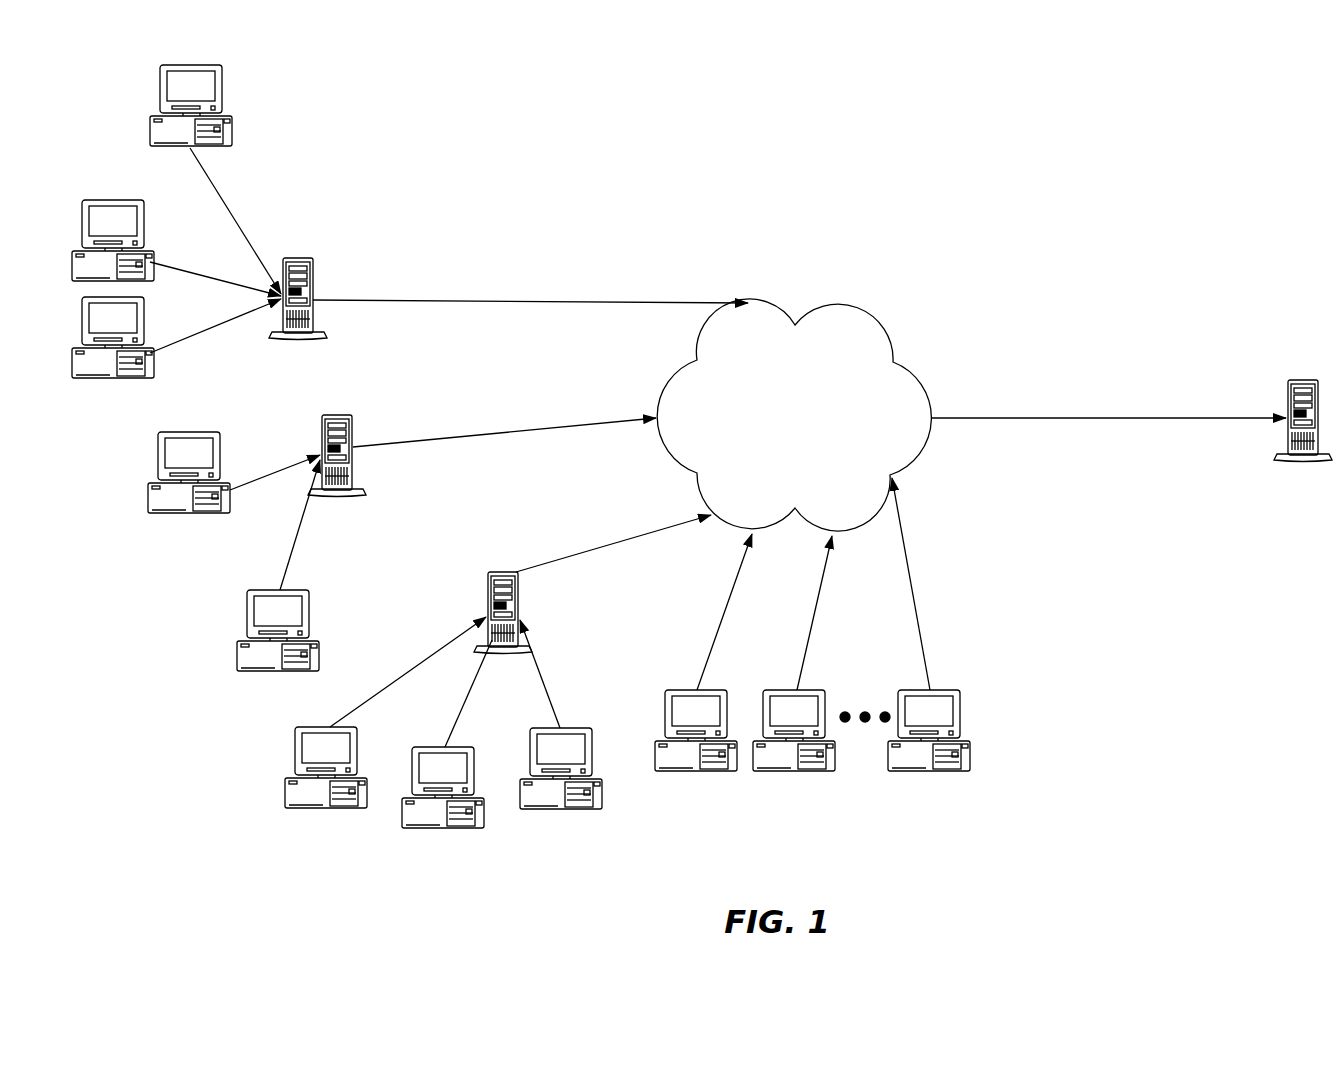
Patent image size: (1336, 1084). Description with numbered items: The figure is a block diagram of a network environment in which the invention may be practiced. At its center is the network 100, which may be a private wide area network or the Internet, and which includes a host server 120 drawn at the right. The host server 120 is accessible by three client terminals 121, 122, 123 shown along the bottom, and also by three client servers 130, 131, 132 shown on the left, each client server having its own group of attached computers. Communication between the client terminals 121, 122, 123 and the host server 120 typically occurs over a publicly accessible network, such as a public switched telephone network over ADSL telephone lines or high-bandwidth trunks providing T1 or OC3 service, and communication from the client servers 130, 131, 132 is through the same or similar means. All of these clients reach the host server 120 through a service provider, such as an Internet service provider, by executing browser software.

The network 100 is at (794, 415).
The host server 120 is at (1303, 437).
The client terminal 121 is at (696, 748).
The client terminal 122 is at (794, 748).
The client terminal 123 is at (929, 748).
The client server 130 is at (337, 472).
The client server 131 is at (298, 316).
The client server 132 is at (503, 630).